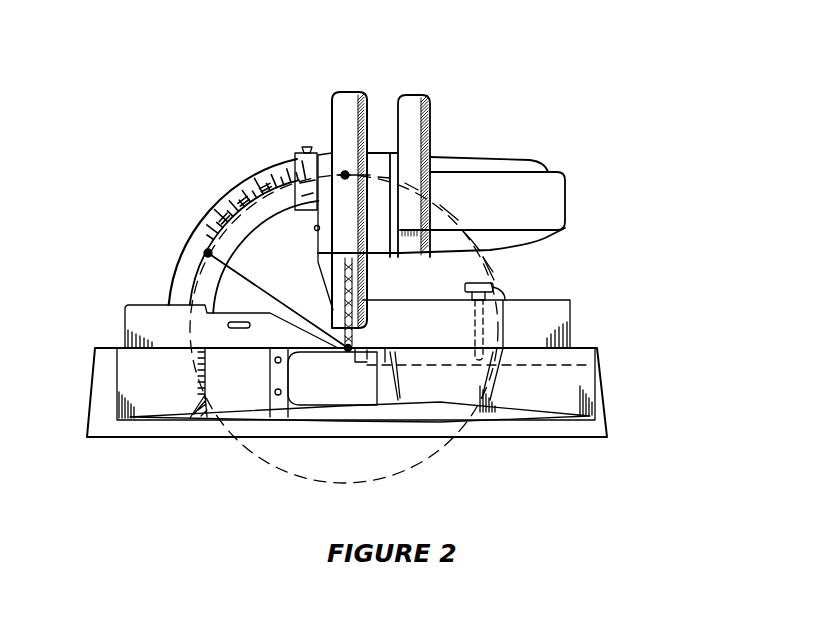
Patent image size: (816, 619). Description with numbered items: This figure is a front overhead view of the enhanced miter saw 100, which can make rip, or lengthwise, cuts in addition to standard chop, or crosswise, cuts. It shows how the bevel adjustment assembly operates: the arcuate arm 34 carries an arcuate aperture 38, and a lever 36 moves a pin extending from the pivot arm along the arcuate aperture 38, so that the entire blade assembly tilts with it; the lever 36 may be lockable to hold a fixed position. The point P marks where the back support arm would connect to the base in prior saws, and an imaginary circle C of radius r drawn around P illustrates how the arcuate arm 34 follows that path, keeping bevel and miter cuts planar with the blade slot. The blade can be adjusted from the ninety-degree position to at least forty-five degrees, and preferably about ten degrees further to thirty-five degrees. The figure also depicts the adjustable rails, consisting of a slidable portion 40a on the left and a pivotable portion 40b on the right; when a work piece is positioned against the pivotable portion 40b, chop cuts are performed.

The miter saw 100 is at (642, 136).
The arcuate arm 34 is at (178, 252).
The lever 36 is at (300, 150).
The arcuate aperture 38 is at (240, 200).
The slidable portion 40a is at (150, 318).
The pivotable portion 40b is at (557, 325).